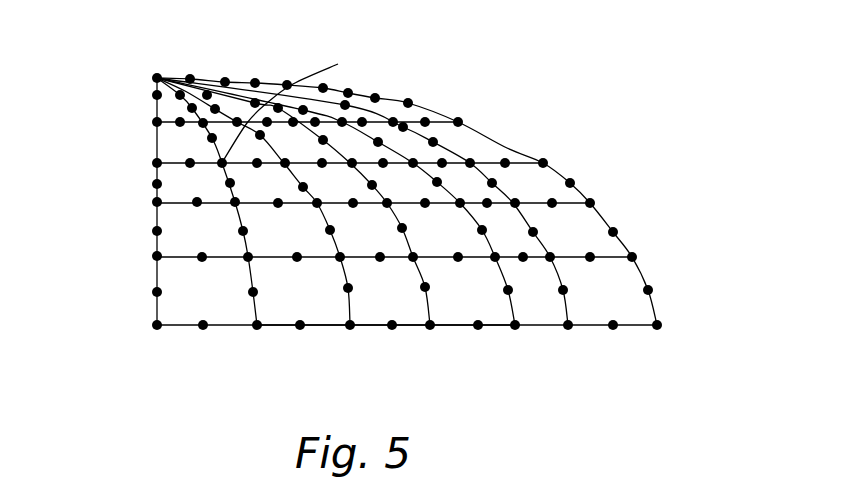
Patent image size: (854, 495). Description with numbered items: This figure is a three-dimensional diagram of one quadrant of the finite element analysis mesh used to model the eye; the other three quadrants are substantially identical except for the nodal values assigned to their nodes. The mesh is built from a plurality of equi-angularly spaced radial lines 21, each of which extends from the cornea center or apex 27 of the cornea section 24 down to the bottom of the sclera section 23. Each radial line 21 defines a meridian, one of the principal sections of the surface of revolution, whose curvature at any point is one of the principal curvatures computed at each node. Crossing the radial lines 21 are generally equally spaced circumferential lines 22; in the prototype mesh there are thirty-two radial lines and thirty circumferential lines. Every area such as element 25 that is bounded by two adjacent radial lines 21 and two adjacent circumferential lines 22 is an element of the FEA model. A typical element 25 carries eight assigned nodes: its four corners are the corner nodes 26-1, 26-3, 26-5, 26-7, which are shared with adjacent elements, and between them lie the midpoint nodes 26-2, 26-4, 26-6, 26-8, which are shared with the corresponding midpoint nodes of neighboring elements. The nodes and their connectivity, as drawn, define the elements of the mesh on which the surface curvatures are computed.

The radial line 21 is at (340, 278).
The circumferential line 22 is at (393, 259).
The sclera section 23 is at (620, 190).
The cornea section 24 is at (130, 38).
The element 25 is at (187, 184).
The corner node 26-1 is at (157, 163).
The midpoint node 26-2 is at (190, 163).
The corner node 26-3 is at (301, 112).
The midpoint node 26-4 is at (232, 183).
The corner node 26-5 is at (237, 205).
The midpoint node 26-6 is at (199, 205).
The corner node 26-7 is at (157, 203).
The midpoint node 26-8 is at (157, 184).
The cornea center or apex 27 is at (157, 78).